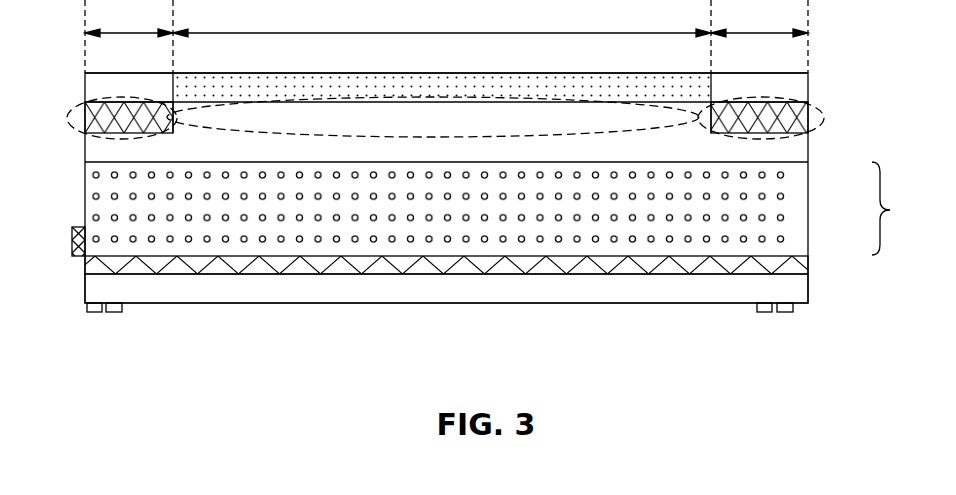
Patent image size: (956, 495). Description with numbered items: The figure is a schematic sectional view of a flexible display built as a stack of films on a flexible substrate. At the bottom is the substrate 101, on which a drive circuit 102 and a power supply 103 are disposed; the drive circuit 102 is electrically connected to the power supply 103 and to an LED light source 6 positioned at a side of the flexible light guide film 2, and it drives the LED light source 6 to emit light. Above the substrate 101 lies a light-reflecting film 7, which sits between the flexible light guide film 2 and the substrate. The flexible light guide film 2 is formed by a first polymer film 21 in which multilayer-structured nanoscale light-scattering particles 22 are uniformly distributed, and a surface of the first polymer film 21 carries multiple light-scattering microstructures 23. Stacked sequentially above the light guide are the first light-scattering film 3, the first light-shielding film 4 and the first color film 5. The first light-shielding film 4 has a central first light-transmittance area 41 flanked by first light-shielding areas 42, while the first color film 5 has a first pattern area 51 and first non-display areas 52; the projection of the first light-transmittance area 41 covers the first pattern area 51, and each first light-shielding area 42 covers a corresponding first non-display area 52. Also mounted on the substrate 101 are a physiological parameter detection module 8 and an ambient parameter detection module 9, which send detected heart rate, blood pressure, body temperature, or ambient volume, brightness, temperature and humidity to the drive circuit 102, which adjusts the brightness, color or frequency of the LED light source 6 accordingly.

The flexible light guide film 2 is at (502, 213).
The first polymer film 21 is at (793, 173).
The multilayer-structured nanoscale light-scattering particles 22 is at (782, 195).
The light-scattering microstructures 23 is at (782, 242).
The first light-scattering film 3 is at (780, 140).
The first light-shielding film 4 is at (780, 115).
The first color film 5 is at (779, 88).
The LED light source 6 is at (80, 257).
The light-reflecting film 7 is at (775, 270).
The physiological parameter detection module 8 is at (766, 313).
The ambient parameter detection module 9 is at (785, 313).
The first light-transmittance area 41 is at (538, 100).
The first light-shielding areas 42 is at (727, 101).
The first pattern area 51 is at (442, 23).
The first non-display areas 52 is at (446, 36).
The substrate 101 is at (777, 298).
The drive circuit 102 is at (93, 313).
The power supply 103 is at (120, 313).